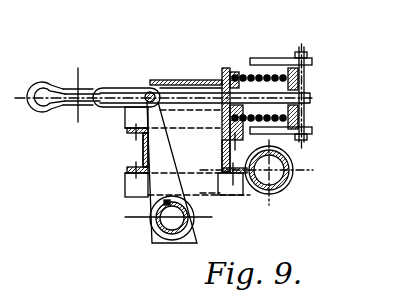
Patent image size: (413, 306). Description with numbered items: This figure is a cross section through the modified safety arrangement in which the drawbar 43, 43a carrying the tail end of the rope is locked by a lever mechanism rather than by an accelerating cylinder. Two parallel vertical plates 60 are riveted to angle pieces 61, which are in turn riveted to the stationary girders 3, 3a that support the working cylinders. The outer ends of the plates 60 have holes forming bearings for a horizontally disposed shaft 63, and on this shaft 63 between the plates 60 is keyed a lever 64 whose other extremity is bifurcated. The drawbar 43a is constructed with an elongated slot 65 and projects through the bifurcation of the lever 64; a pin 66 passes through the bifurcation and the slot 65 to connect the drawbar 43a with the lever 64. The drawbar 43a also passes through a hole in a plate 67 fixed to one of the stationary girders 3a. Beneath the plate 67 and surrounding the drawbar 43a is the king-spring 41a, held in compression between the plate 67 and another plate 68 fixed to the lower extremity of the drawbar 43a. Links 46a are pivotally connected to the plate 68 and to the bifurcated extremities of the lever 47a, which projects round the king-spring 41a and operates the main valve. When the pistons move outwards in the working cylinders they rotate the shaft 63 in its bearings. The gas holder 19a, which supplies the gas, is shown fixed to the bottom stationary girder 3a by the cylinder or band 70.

The drawbar 43 is at (92, 90).
The drawbar 43a is at (310, 98).
The elongated slot 65 is at (128, 96).
The pin 66 is at (155, 93).
The parallel vertical plates 60 is at (198, 78).
The lever 64 is at (162, 148).
The angle pieces 61 is at (128, 117).
The stationary girders 3 is at (145, 147).
The stationary girders 3a is at (232, 147).
The shaft 63 is at (157, 225).
The plate 67 is at (225, 68).
The plate 68 is at (300, 79).
The king-spring 41a is at (242, 75).
The links 46a is at (282, 65).
The lever 47a is at (260, 58).
The cylinder or band 70 is at (294, 156).
The gas holder 19a is at (296, 168).